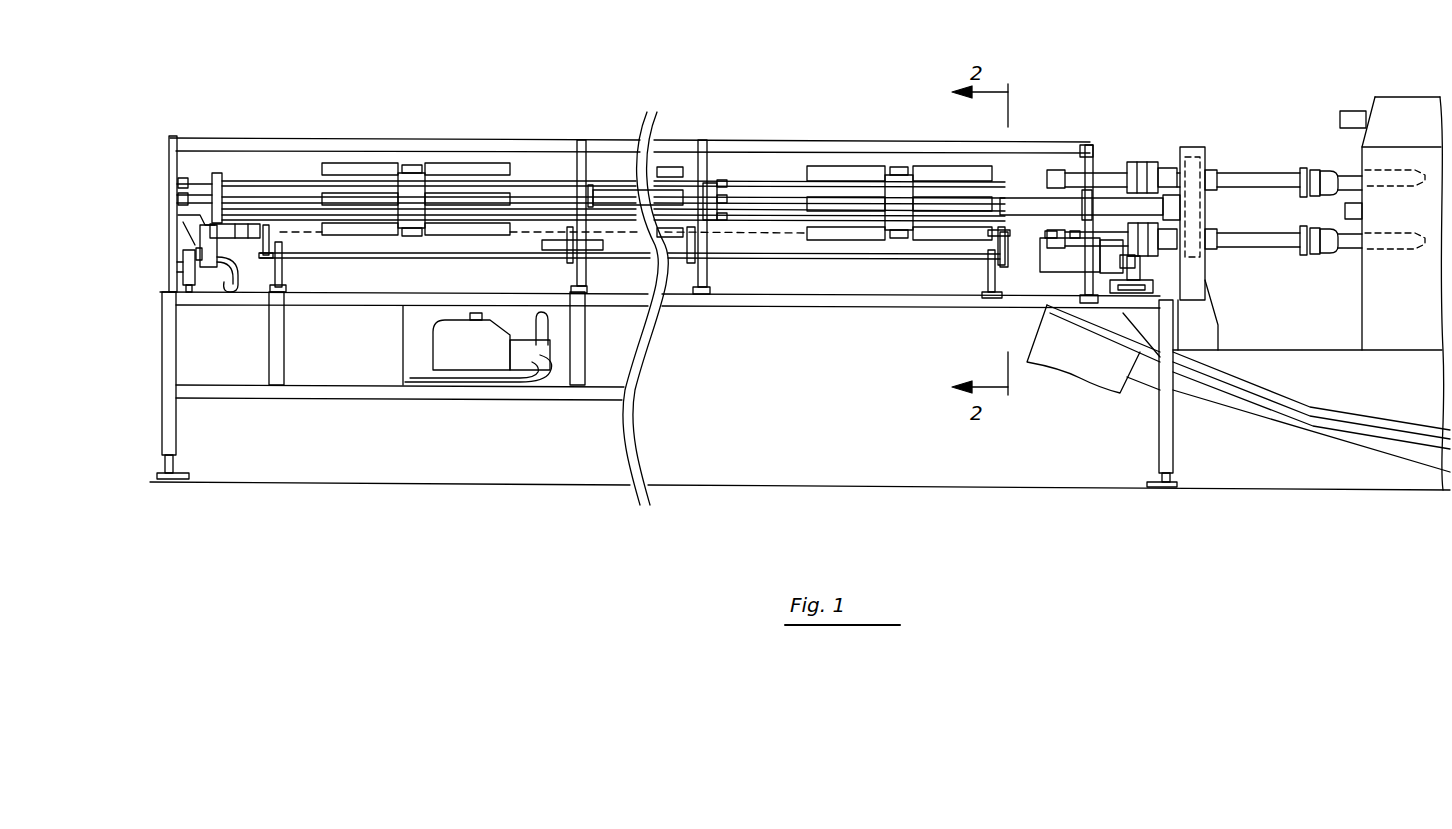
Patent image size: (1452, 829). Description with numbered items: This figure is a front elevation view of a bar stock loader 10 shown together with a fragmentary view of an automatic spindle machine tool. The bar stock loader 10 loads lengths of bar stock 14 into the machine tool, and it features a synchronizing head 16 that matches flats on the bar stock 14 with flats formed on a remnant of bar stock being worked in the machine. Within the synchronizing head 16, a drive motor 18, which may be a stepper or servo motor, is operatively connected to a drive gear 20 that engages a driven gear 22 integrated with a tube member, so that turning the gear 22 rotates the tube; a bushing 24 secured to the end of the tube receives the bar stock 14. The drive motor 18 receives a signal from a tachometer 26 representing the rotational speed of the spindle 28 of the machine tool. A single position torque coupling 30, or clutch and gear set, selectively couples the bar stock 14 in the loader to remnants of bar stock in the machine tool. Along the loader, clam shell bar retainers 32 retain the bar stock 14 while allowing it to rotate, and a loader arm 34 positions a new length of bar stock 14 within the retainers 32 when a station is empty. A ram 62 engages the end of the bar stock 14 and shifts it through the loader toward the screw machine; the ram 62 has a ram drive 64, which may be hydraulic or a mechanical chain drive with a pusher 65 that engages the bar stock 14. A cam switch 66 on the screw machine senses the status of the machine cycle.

The bar stock loader 10 is at (767, 124).
The bar stock 14 is at (790, 237).
The synchronizing head 16 is at (1170, 145).
The drive motor 18 is at (1068, 258).
The drive gear 20 is at (1142, 264).
The gear 22 is at (1128, 232).
The bushing 24 is at (1046, 232).
The tachometer 26 is at (1344, 212).
The spindle 28 is at (1338, 170).
The single position torque coupling 30 is at (1147, 160).
The clam shell bar retainers 32 is at (385, 163).
The loader arm 34 is at (985, 252).
The ram 62 is at (240, 250).
The ram drive 64 is at (205, 268).
The pusher 65 is at (245, 226).
The cam switch 66 is at (1350, 110).